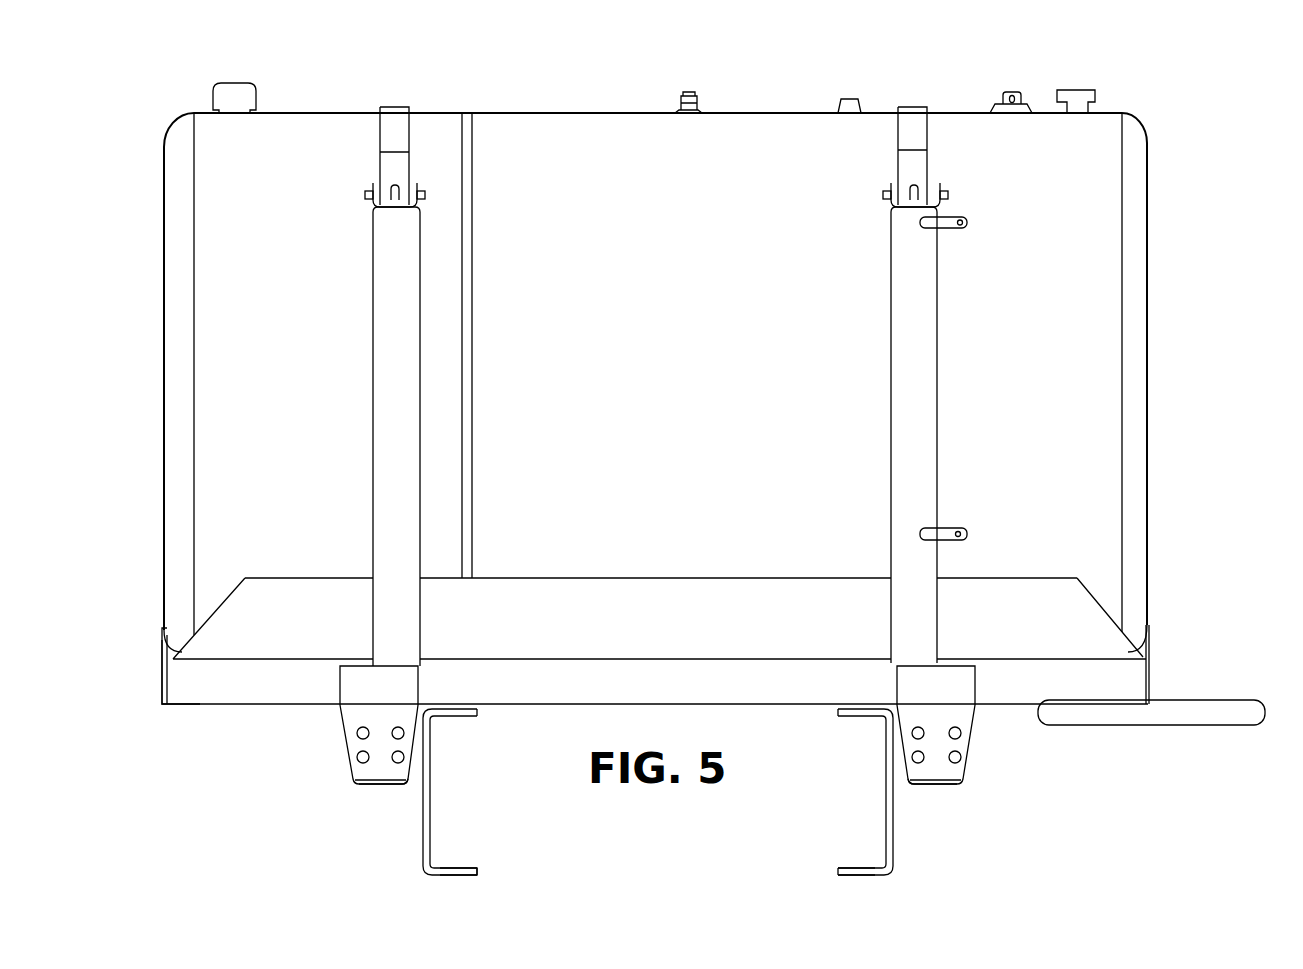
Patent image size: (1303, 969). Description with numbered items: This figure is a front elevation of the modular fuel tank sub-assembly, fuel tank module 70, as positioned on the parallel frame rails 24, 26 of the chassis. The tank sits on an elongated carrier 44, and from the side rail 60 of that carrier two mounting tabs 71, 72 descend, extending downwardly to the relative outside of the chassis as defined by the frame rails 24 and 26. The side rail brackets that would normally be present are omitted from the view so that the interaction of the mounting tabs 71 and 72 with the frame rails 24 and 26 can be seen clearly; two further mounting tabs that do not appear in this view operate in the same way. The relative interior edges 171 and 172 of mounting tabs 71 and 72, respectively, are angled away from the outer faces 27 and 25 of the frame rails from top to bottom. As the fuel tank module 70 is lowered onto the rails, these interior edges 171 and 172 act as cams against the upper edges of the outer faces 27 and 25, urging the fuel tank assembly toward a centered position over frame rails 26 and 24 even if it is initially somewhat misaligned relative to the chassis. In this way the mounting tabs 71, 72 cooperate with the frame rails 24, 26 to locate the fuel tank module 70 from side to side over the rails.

The fuel tank module 70 is at (1143, 103).
The side rail 60 is at (1137, 677).
The elongated carrier 44 is at (188, 705).
The mounting tab 71 is at (363, 705).
The mounting tab 72 is at (960, 700).
The interior edge 171 is at (413, 797).
The interior edge 172 is at (908, 785).
The frame rail 24 is at (838, 872).
The outer face 25 is at (897, 842).
The frame rail 26 is at (477, 872).
The outer face 27 is at (422, 850).